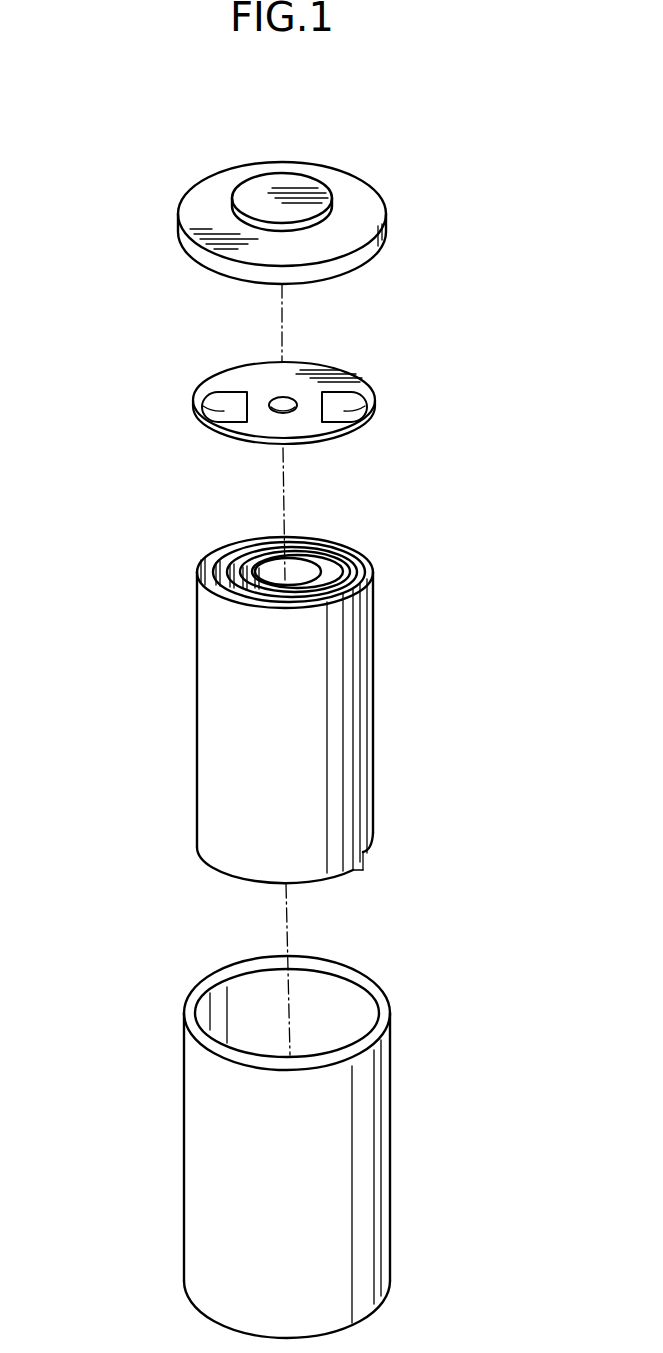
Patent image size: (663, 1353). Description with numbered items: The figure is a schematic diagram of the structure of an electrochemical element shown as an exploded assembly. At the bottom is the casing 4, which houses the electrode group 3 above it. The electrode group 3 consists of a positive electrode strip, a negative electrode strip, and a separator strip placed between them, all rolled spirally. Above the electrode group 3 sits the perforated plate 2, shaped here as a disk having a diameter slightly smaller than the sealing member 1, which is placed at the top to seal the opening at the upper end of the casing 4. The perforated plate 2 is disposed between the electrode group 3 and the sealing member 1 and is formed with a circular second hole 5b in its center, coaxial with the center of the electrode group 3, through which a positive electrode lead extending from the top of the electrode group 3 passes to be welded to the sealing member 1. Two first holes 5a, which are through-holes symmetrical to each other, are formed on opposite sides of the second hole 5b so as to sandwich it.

The sealing member 1 is at (387, 193).
The perforated plate 2 is at (283, 418).
The electrode group 3 is at (374, 673).
The casing 4 is at (391, 1125).
The first holes 5a is at (197, 407).
The second hole 5b is at (276, 411).